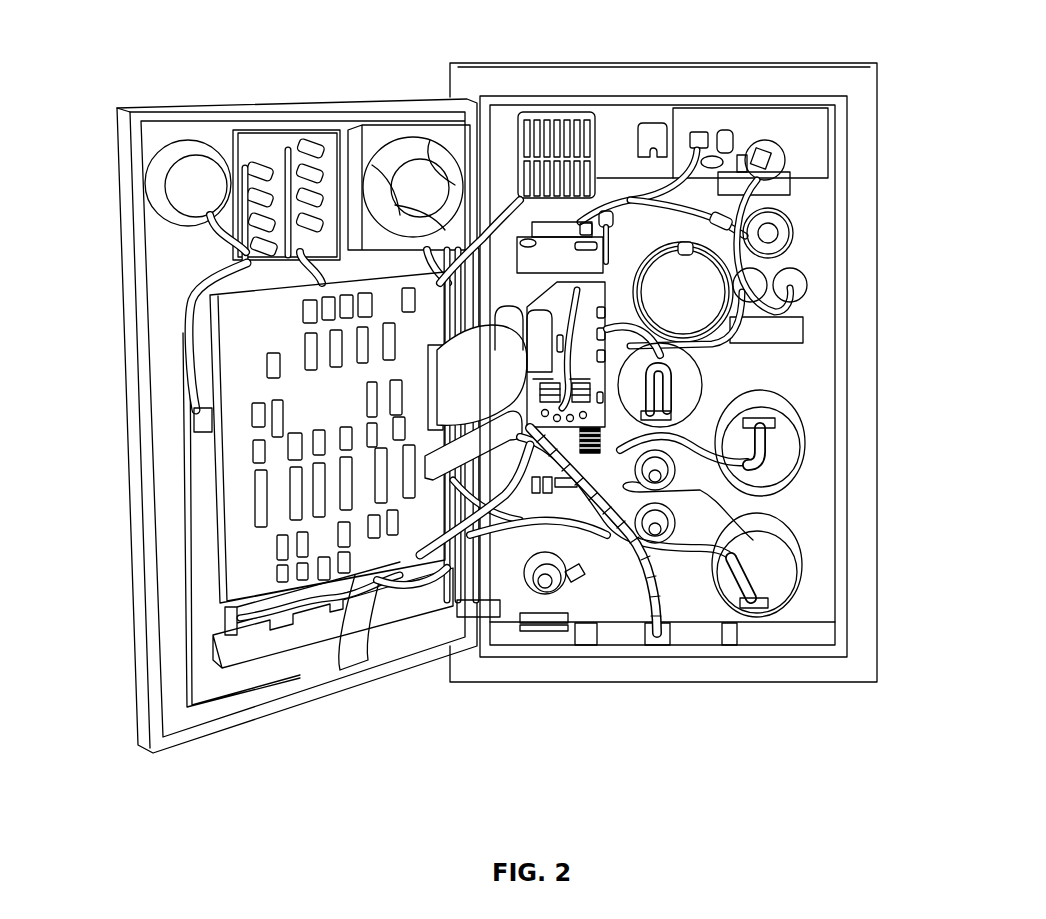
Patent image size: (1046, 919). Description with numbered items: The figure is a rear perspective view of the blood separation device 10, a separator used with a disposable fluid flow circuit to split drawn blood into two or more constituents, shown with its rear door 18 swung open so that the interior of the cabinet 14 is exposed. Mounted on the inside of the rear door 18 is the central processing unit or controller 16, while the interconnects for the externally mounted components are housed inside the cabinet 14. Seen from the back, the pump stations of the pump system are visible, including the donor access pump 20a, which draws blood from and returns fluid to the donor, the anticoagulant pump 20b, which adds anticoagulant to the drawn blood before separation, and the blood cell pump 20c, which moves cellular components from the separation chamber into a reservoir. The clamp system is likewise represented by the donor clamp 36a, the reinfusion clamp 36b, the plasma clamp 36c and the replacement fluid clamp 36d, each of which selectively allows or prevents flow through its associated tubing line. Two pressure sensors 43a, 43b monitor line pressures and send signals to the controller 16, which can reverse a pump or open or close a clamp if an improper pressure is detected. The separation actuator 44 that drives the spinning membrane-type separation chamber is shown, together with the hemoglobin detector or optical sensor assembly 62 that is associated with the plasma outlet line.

The blood separation device 10 is at (97, 653).
The cabinet 14 is at (855, 675).
The controller 16 is at (237, 427).
The rear door 18 is at (217, 727).
The donor access pump 20a is at (780, 575).
The anticoagulant pump 20b is at (788, 455).
The blood cell pump 20c is at (672, 404).
The donor clamp 36a is at (670, 477).
The reinfusion clamp 36b is at (670, 525).
The plasma clamp 36c is at (545, 594).
The replacement fluid clamp 36d is at (773, 219).
The pressure sensor 43a is at (793, 282).
The pressure sensor 43b is at (748, 267).
The separation actuator 44 is at (555, 117).
The optical sensor assembly 62 is at (558, 490).